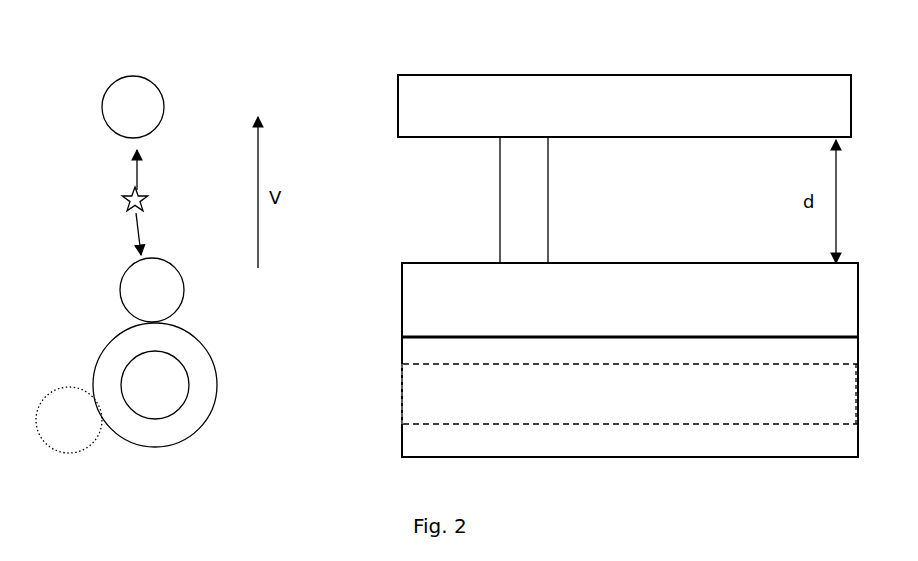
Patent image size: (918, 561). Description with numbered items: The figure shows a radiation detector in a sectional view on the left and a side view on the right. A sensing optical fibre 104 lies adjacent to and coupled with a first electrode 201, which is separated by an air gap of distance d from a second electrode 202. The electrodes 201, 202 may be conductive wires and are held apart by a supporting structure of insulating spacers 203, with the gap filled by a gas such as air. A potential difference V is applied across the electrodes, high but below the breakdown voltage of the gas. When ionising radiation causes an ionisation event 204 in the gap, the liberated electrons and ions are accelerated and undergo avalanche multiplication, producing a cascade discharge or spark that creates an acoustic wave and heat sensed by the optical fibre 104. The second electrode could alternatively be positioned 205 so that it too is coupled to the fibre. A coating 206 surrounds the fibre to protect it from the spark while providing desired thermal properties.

The optical fibre 104 is at (402, 388).
The first electrode 201 is at (400, 275).
The second electrode 202 is at (398, 76).
The insulating spacers 203 is at (549, 207).
The ionisation event 204 is at (123, 191).
The alternative second electrode position 205 is at (70, 387).
The coating 206 is at (402, 452).